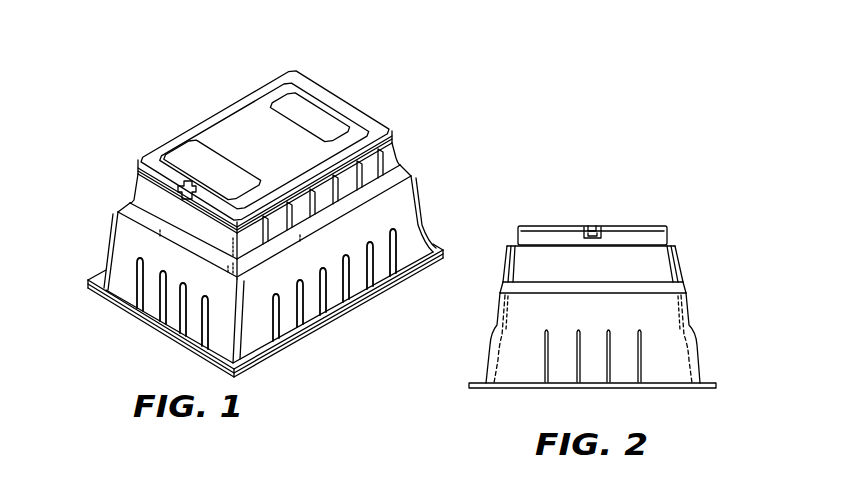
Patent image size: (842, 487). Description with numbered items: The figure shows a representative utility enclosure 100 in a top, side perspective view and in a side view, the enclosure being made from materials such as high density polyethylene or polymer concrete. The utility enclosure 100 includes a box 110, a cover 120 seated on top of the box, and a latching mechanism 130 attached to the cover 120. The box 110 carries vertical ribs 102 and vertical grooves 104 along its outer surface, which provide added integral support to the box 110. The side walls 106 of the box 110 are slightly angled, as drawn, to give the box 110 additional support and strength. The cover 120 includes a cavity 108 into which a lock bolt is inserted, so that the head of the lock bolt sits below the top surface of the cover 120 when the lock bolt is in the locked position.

In FIG. 1, the utility enclosure 100 is at (411, 51).
In FIG. 2, the utility enclosure 100 is at (724, 187).
In FIG. 1, the vertical ribs 102 is at (300, 307).
In FIG. 2, the vertical ribs 102 is at (695, 345).
In FIG. 1, the vertical grooves 104 is at (392, 130).
In FIG. 2, the vertical grooves 104 is at (682, 262).
In FIG. 1, the side walls 106 is at (264, 222).
In FIG. 2, the side walls 106 is at (686, 300).
In FIG. 2, the cavity 108 is at (592, 225).
In FIG. 1, the box 110 is at (420, 207).
In FIG. 2, the box 110 is at (500, 300).
In FIG. 1, the cover 120 is at (262, 107).
In FIG. 2, the cover 120 is at (540, 225).
In FIG. 1, the latching mechanism 130 is at (188, 181).
In FIG. 2, the latching mechanism 130 is at (602, 226).